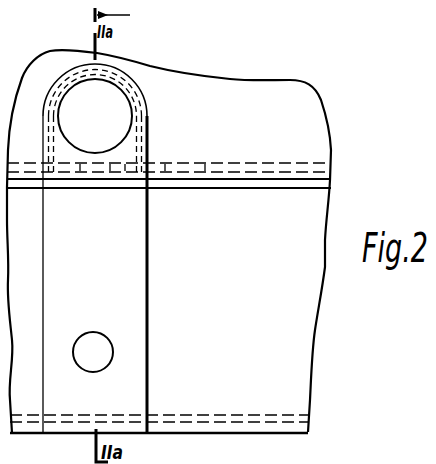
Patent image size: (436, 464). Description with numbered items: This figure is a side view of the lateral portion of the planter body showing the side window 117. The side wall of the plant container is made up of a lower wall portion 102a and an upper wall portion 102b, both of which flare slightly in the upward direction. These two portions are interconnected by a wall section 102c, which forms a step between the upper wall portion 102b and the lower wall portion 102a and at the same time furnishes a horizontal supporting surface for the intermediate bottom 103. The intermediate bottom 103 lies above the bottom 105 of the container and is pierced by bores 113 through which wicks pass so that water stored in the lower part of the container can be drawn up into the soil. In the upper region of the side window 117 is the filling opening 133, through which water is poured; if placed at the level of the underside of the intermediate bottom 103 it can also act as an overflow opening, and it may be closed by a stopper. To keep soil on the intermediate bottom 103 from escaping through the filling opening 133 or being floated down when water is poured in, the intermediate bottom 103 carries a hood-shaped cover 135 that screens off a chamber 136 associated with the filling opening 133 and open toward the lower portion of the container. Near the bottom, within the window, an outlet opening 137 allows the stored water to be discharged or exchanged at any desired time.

The lower wall portion 102a is at (303, 319).
The upper wall portion 102b is at (323, 137).
The wall section 102c is at (323, 183).
The intermediate bottom 103 is at (231, 165).
The bottom 105 is at (240, 420).
The bores 113 is at (90, 178).
The side window 117 is at (137, 268).
The filling opening 133 is at (100, 143).
The hood-shaped cover 135 is at (148, 110).
The chamber 136 is at (123, 155).
The outlet opening 137 is at (103, 347).